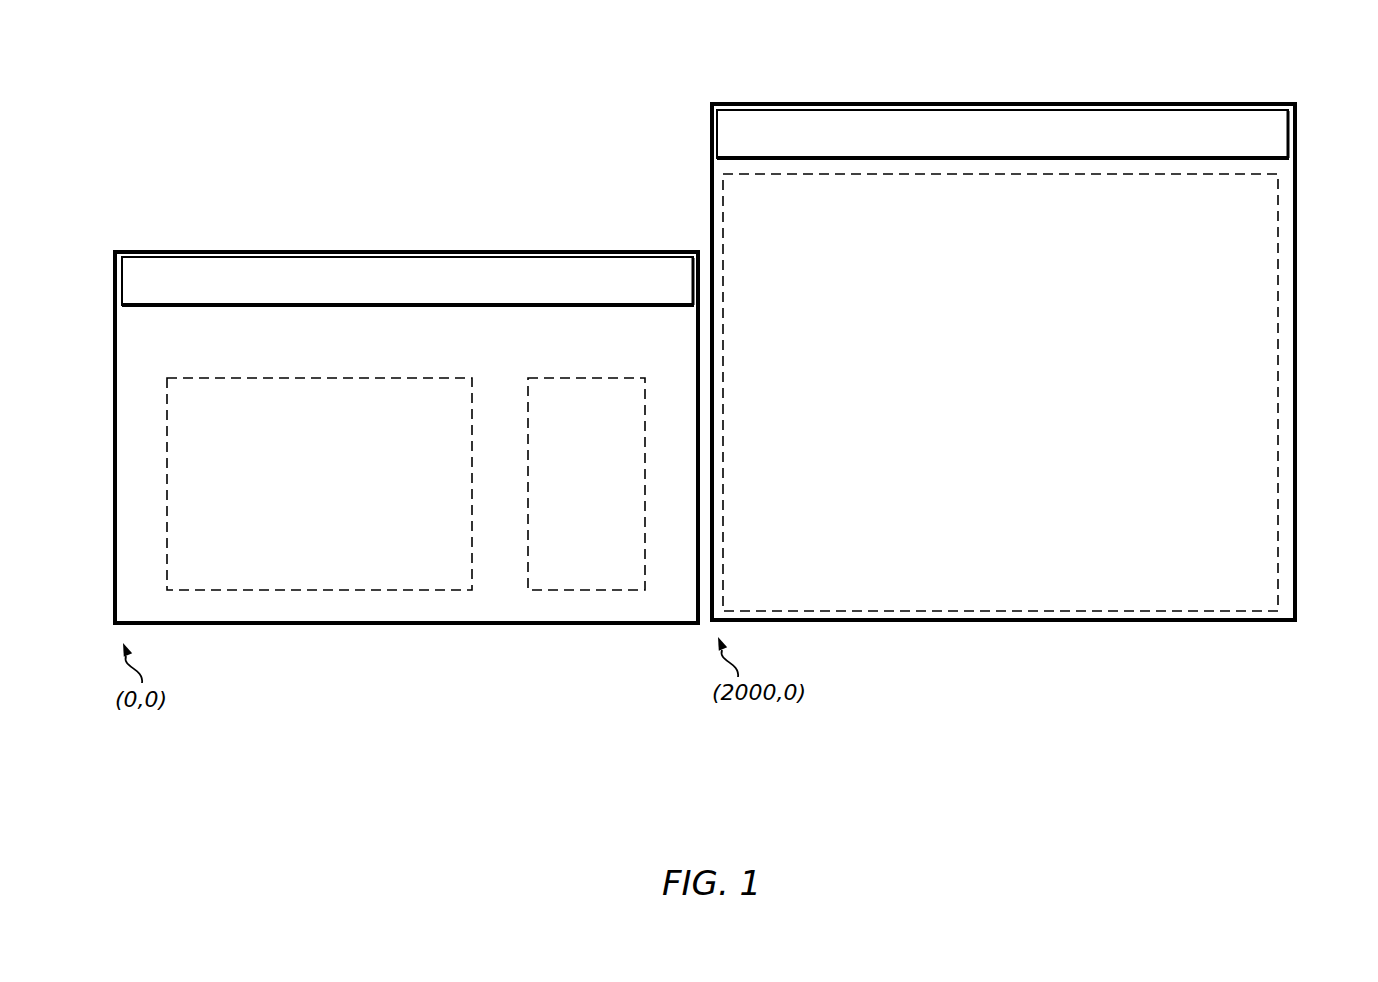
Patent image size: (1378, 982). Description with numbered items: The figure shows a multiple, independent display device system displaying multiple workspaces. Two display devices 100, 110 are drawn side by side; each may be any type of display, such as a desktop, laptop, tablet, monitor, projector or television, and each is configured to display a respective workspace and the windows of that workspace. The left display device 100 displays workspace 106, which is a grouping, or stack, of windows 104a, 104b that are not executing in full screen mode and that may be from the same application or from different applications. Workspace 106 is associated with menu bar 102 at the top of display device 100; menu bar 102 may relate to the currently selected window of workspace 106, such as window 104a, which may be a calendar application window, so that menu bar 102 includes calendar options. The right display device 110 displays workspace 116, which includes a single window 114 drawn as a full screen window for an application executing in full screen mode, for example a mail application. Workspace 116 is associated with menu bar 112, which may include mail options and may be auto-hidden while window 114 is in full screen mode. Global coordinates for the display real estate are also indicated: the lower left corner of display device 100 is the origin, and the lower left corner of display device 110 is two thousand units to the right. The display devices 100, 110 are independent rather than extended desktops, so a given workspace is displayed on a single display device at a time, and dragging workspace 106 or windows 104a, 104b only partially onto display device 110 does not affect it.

The display device 100 is at (406, 402).
The menu bar 102 is at (408, 281).
The window 104a is at (319, 484).
The window 104b is at (586, 484).
The workspace 106 is at (391, 456).
The display device 110 is at (1029, 328).
The menu bar 112 is at (1003, 134).
The window 114 is at (1000, 392).
The workspace 116 is at (1294, 246).